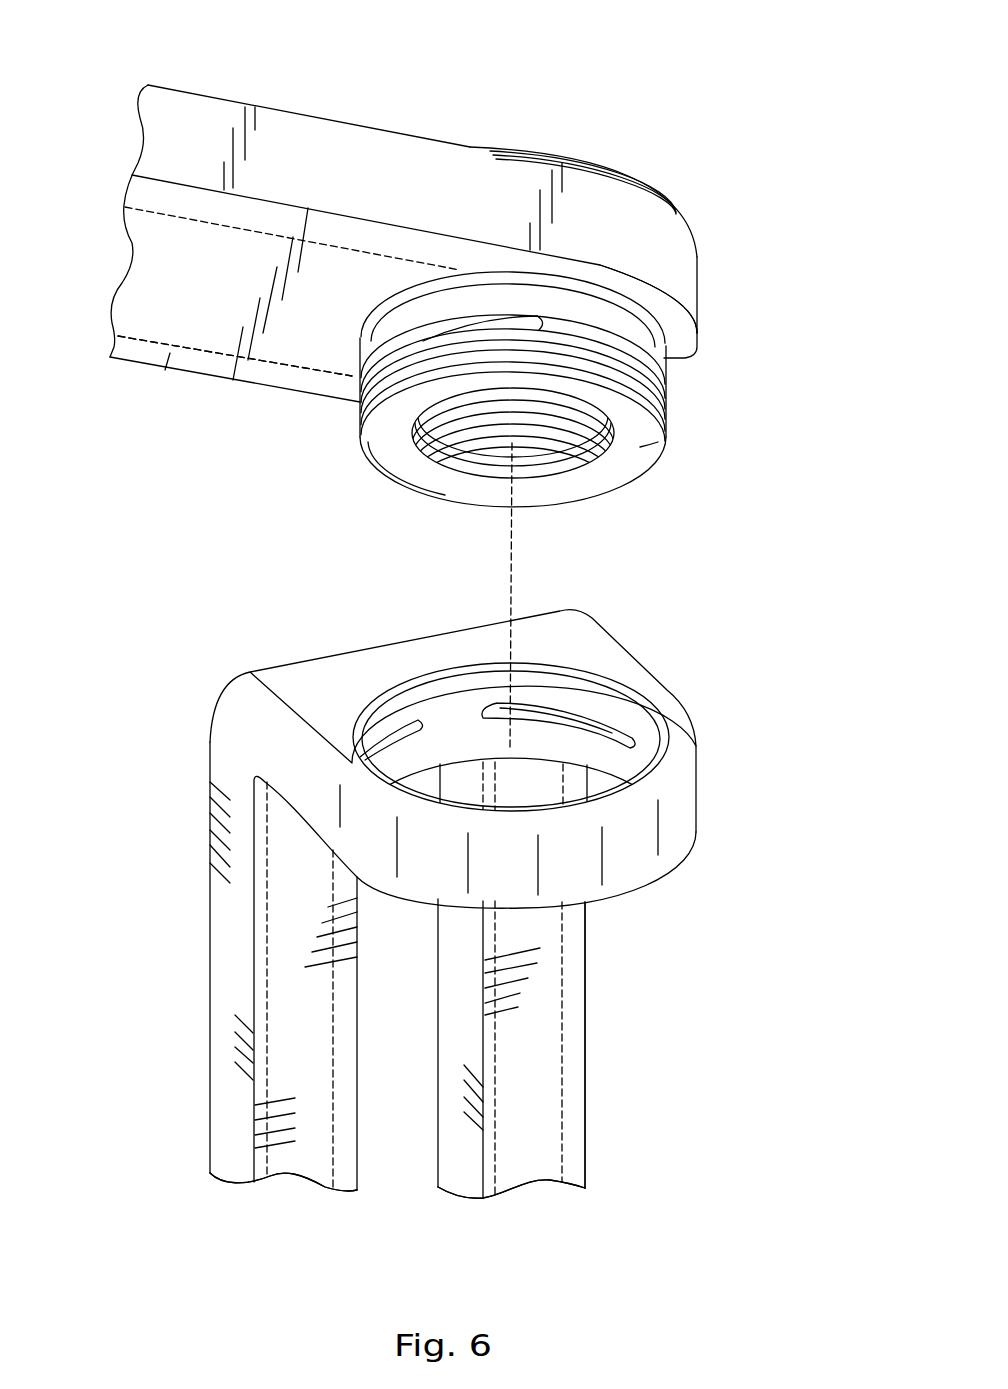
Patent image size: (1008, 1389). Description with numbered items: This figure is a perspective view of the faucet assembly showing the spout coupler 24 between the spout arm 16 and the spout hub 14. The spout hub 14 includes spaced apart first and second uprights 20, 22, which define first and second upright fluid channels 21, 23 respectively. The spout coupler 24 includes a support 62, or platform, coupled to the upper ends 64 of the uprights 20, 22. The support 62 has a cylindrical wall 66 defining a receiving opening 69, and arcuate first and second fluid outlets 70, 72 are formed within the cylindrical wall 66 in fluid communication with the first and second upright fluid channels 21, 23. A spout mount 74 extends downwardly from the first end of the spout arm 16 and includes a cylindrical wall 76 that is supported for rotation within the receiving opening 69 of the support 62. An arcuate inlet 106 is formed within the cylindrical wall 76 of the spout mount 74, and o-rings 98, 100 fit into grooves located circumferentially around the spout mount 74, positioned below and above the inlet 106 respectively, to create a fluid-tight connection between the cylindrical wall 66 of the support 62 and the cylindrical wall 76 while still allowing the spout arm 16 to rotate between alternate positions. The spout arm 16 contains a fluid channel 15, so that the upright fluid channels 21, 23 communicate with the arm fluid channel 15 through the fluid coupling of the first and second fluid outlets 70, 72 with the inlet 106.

The spout hub 14 is at (623, 1107).
The fluid channel 15 is at (170, 330).
The spout arm 16 is at (427, 130).
The first upright 20 is at (207, 980).
The first upright fluid channel 21 is at (332, 1153).
The second upright 22 is at (590, 1010).
The second upright fluid channel 23 is at (565, 1147).
The spout coupler 24 is at (469, 875).
The support 62 is at (680, 833).
The upper ends 64 is at (208, 698).
The cylindrical wall 66 is at (677, 723).
The receiving opening 69 is at (452, 703).
The first fluid outlet 70 is at (383, 724).
The second fluid outlet 72 is at (599, 712).
The spout mount 74 is at (536, 480).
The cylindrical wall 76 is at (617, 333).
The o-ring 98 is at (670, 408).
The o-ring 100 is at (693, 353).
The arcuate inlet 106 is at (362, 372).